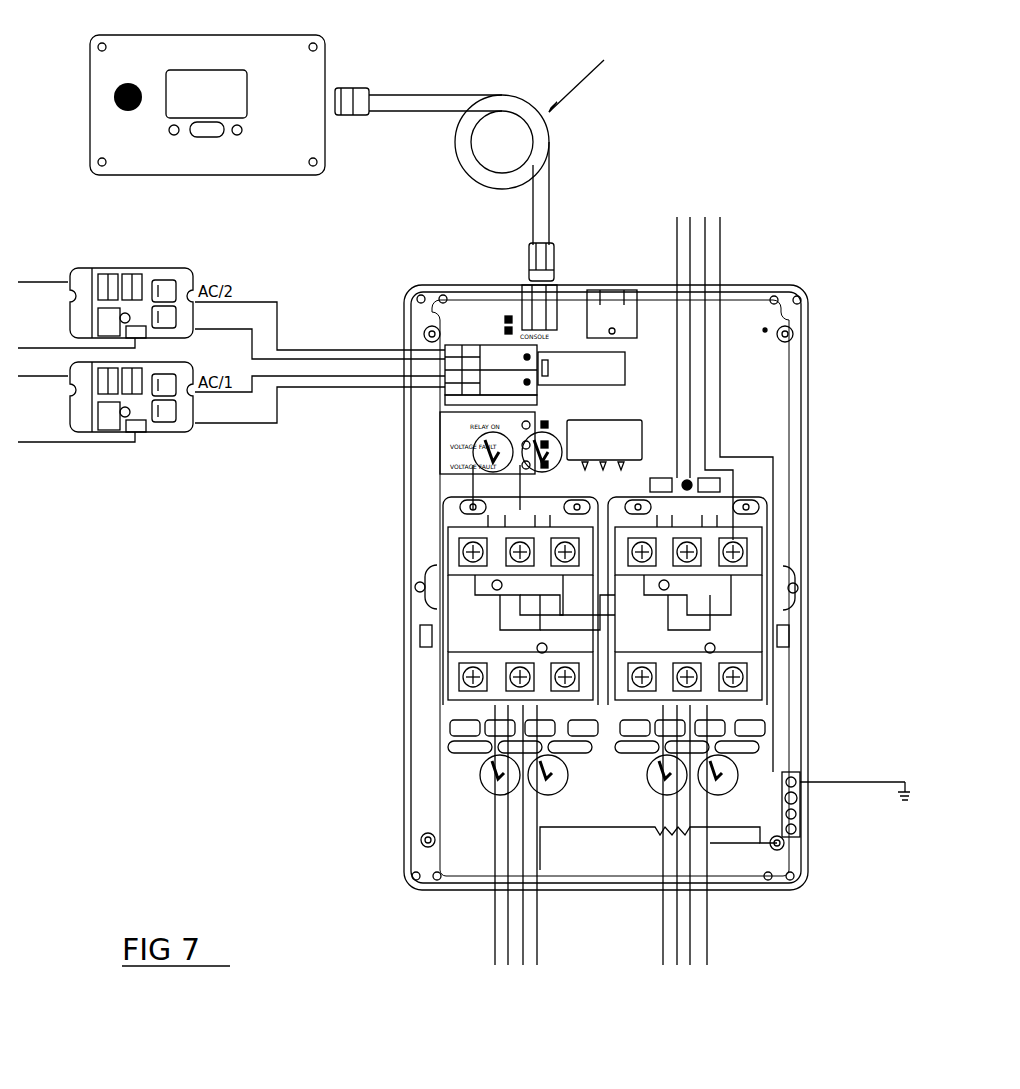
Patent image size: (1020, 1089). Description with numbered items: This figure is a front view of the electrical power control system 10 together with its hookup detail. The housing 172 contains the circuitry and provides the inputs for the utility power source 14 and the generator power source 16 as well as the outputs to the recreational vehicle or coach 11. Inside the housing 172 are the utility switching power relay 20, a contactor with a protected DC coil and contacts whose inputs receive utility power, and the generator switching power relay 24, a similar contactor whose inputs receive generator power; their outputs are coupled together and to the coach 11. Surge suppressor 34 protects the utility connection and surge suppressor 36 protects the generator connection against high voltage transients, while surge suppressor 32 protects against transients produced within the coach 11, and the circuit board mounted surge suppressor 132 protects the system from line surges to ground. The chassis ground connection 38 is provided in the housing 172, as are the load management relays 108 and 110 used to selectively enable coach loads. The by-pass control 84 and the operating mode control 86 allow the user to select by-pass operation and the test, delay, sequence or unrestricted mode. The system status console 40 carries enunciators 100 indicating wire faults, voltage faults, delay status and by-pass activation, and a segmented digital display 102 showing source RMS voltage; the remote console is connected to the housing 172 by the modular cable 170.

The electrical power control system 10 is at (800, 200).
The recreational vehicle 11 is at (700, 183).
The utility power source 14 is at (512, 992).
The generator power source 16 is at (688, 992).
The utility switching power relay 20 is at (467, 627).
The generator switching power relay 24 is at (743, 608).
The surge suppressor 32 is at (475, 465).
The surge suppressor 34 is at (480, 787).
The surge suppressor 36 is at (742, 783).
The earth ground 38 is at (850, 788).
The system status console 40 is at (255, 42).
The by-pass control 84 is at (612, 290).
The operating mode control 86 is at (585, 352).
The enunciators 100 is at (465, 423).
The segmented digital display 102 is at (642, 440).
The load management relay 108 is at (145, 272).
The load management relay 110 is at (150, 428).
The surge suppressor 132 is at (447, 750).
The modular cable 170 is at (482, 172).
The housing 172 is at (812, 295).